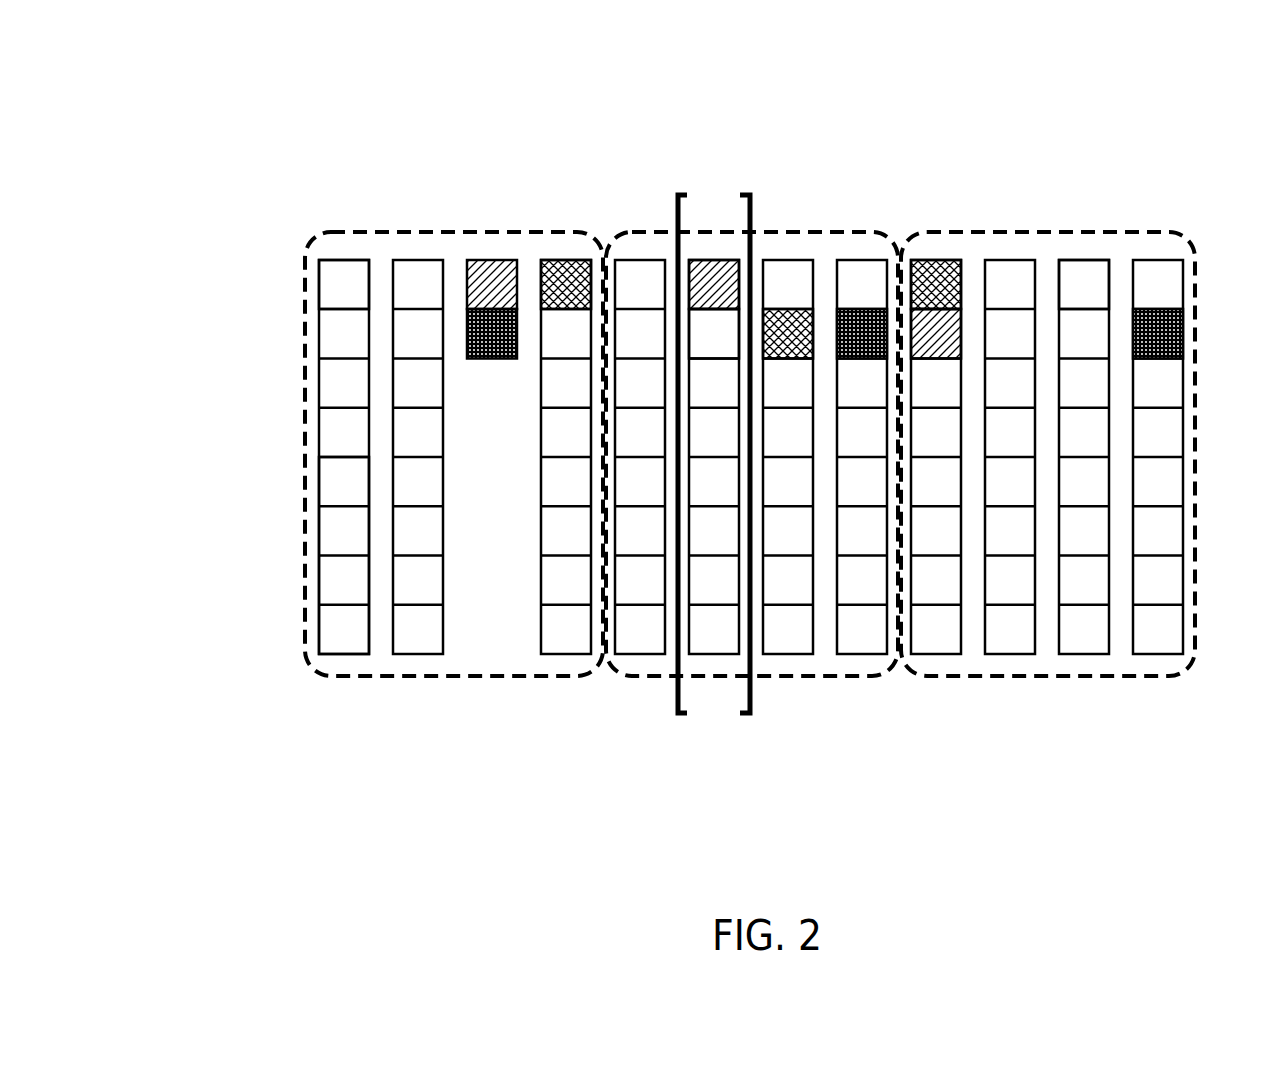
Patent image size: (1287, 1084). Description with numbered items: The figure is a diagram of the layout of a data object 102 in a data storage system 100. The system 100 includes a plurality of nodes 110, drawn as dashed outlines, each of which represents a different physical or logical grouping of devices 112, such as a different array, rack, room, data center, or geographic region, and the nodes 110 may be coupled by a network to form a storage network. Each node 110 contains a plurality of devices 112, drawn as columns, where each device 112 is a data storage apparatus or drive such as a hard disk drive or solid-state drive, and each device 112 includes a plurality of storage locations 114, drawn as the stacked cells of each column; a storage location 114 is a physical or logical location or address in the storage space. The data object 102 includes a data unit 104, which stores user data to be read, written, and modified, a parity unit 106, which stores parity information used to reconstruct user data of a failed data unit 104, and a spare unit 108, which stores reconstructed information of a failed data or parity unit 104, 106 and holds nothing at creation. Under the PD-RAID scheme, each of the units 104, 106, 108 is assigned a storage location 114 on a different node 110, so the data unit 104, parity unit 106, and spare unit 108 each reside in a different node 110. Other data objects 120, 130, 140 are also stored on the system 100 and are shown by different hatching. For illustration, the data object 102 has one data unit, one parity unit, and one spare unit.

The data storage system 100 is at (214, 147).
The data object 102 is at (340, 257).
The data unit 104 is at (320, 289).
The parity unit 106 is at (705, 322).
The spare unit 108 is at (1090, 270).
The node 110 is at (392, 230).
The device 112 is at (714, 193).
The storage location 114 is at (342, 626).
The data object 120 is at (497, 272).
The data object 130 is at (567, 272).
The data object 140 is at (1153, 306).